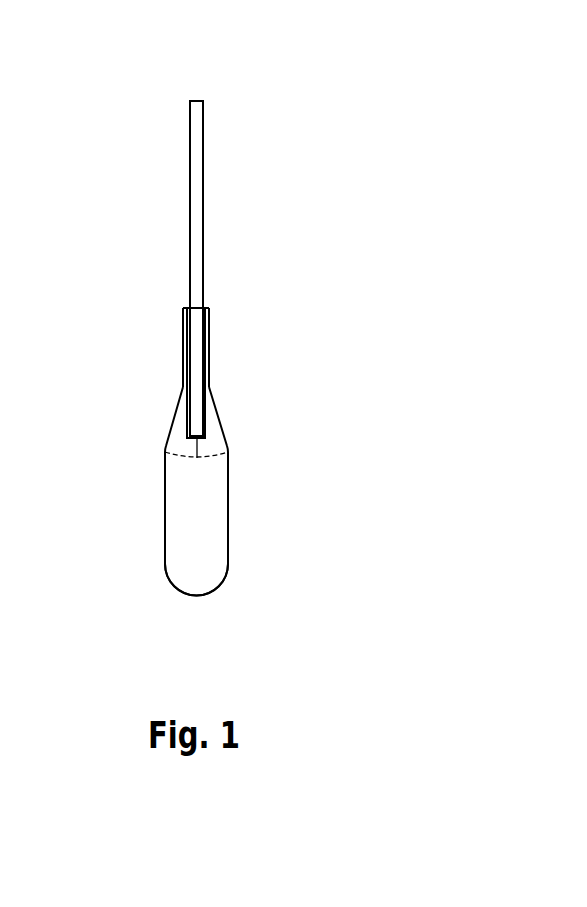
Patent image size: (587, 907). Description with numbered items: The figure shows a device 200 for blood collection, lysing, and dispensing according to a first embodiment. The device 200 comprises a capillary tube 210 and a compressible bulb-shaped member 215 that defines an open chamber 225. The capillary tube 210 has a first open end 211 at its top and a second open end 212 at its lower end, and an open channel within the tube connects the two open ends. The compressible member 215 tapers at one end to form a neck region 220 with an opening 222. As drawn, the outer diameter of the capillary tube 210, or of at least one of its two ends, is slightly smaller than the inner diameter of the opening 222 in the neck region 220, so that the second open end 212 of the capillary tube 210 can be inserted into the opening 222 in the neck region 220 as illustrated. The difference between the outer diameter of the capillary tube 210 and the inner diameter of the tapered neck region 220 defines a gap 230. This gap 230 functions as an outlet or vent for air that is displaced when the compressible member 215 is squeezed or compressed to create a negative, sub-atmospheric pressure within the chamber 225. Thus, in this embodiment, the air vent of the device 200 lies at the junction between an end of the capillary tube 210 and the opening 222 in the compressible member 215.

The device 200 is at (105, 168).
The capillary tube 210 is at (203, 186).
The first open end 211 is at (198, 100).
The second open end 212 is at (195, 457).
The compressible bulb-shaped member 215 is at (165, 558).
The neck region 220 is at (209, 354).
The opening 222 is at (207, 305).
The open chamber 225 is at (207, 515).
The gap 230 is at (184, 306).